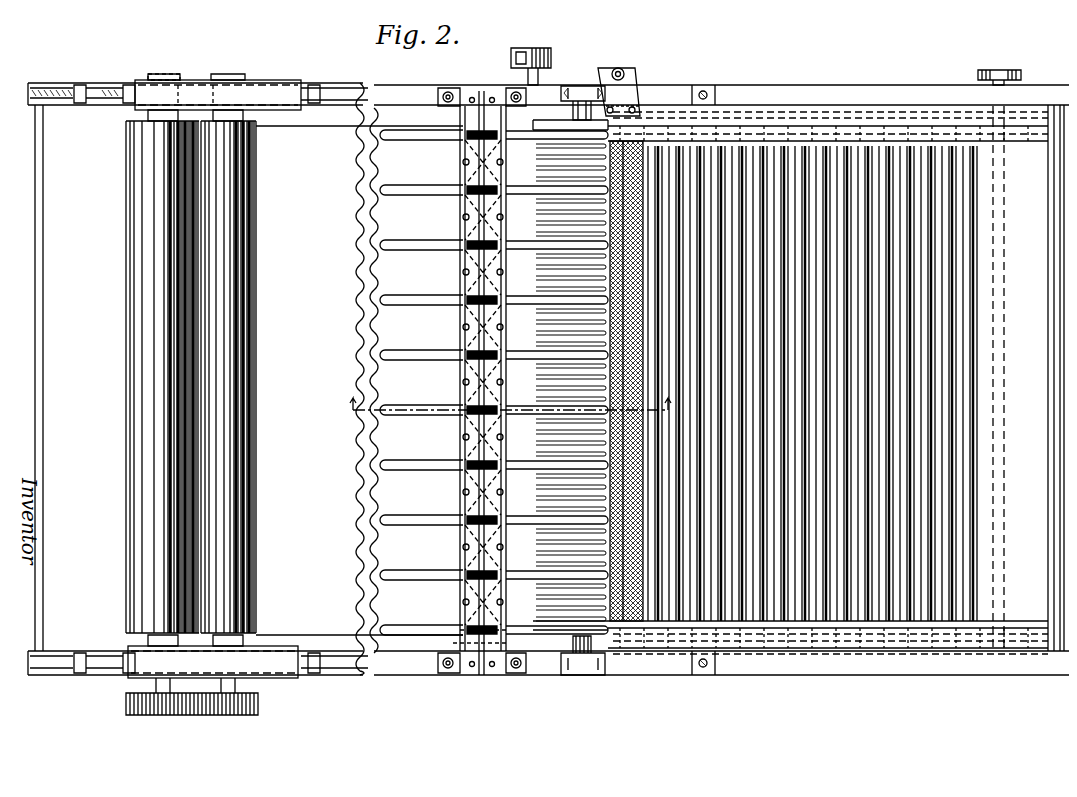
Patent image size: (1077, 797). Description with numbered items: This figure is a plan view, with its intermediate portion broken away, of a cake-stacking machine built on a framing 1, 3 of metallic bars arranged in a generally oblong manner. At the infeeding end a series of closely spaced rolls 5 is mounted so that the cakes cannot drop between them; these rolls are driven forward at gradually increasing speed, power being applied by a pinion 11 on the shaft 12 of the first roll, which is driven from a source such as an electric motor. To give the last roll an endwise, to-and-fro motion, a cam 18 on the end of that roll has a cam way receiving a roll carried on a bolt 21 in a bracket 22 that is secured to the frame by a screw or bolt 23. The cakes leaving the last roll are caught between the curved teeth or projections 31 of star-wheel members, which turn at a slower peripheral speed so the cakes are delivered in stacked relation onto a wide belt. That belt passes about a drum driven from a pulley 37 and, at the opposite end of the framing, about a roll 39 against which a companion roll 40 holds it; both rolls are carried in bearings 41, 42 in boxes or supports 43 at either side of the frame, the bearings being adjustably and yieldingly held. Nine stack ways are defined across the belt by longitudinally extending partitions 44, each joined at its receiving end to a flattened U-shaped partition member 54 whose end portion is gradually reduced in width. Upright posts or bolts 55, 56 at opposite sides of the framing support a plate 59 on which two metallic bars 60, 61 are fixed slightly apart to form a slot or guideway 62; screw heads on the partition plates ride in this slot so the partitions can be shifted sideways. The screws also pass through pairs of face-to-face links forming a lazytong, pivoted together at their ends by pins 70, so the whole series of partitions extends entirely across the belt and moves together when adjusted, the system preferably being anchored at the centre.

The main framing 1 is at (753, 108).
The framing member 3 is at (500, 381).
The series of rolls 5 is at (960, 432).
The pinion 11 is at (978, 62).
The shaft of the first roll 12 is at (997, 298).
The cam 18 is at (628, 72).
The bolt 21 is at (610, 60).
The bracket 22 is at (594, 80).
The screw or bolt 23 is at (630, 102).
The teeth or projections 31 is at (550, 466).
The pulley 37 is at (522, 45).
The roll 39 is at (135, 391).
The companion roll 40 is at (238, 391).
The bearing 41 is at (160, 72).
The bearing 42 is at (222, 63).
The boxes or supports 43 is at (258, 82).
The longitudinally extending partitions 44 is at (399, 350).
The partition member 54 is at (510, 345).
The upright posts or bolts 55 is at (428, 666).
The upright posts or bolts 56 is at (440, 80).
The plate 59 is at (462, 82).
The metallic bar 60 is at (455, 632).
The metallic bar 61 is at (488, 633).
The slot or guideway 62 is at (471, 667).
The pins 70 is at (455, 210).